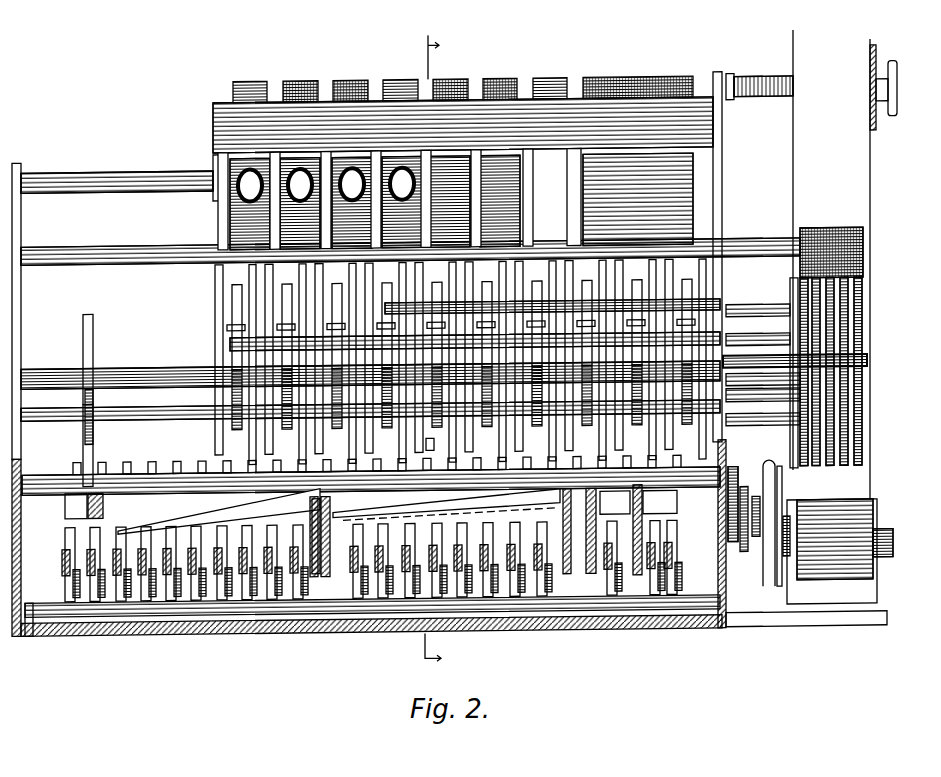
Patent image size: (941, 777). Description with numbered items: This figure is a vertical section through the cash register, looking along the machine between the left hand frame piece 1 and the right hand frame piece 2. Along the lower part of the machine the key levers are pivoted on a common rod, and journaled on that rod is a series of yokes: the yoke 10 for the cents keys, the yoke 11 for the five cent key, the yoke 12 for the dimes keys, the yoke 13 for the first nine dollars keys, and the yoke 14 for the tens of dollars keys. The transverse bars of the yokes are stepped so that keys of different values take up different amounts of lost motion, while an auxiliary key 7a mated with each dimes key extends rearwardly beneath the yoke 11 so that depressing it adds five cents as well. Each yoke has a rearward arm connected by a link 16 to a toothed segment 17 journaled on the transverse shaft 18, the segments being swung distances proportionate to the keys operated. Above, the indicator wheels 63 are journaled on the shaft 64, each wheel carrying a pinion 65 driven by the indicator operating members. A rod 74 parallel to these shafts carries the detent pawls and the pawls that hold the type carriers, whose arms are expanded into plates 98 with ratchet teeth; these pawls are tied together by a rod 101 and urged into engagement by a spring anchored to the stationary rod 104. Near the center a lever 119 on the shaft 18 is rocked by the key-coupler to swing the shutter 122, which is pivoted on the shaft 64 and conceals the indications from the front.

The left hand frame piece 1 is at (21, 320).
The right hand frame piece 2 is at (722, 214).
The auxiliary key 7a is at (449, 503).
The yoke 10 is at (638, 529).
The yoke 11 is at (563, 497).
The yoke 12 is at (446, 502).
The yoke 13 is at (219, 532).
The yoke 14 is at (446, 353).
The link 16 is at (83, 448).
The toothed segment 17 is at (83, 341).
The transverse shaft 18 is at (158, 357).
The indicator wheel 63 is at (345, 80).
The shaft 64 is at (118, 174).
The pinion 65 is at (570, 154).
The rod 74 is at (152, 250).
The plate 98 is at (870, 284).
The rod 101 is at (845, 233).
The stationary rod 104 is at (867, 360).
The lever 119 is at (434, 443).
The shutter 122 is at (213, 118).